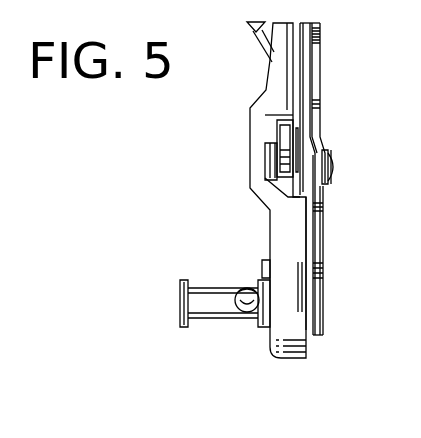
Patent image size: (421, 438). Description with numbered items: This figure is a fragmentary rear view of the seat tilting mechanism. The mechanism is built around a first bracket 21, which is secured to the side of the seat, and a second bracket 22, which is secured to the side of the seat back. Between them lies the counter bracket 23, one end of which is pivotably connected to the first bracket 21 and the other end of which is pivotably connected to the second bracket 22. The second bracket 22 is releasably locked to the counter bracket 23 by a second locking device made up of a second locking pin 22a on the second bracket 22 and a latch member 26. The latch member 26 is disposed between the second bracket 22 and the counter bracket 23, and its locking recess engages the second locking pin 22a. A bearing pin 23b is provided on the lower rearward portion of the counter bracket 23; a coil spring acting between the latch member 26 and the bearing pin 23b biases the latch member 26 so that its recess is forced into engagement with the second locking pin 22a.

The first bracket 21 is at (310, 238).
The second bracket 22 is at (318, 77).
The second locking pin 22a is at (272, 170).
The counter bracket 23 is at (262, 91).
The bearing pin 23b is at (216, 309).
The latch member 26 is at (284, 133).